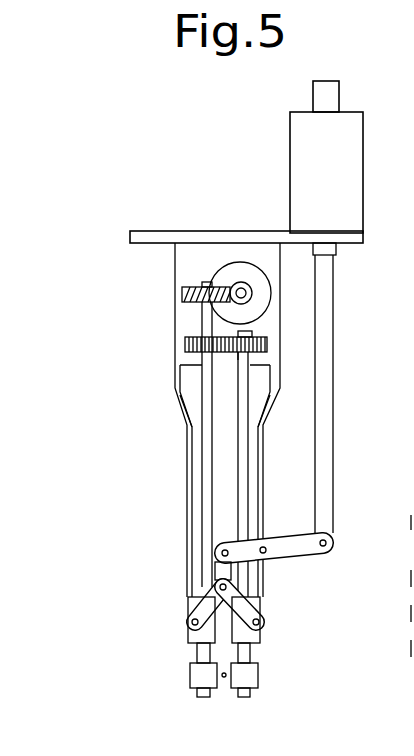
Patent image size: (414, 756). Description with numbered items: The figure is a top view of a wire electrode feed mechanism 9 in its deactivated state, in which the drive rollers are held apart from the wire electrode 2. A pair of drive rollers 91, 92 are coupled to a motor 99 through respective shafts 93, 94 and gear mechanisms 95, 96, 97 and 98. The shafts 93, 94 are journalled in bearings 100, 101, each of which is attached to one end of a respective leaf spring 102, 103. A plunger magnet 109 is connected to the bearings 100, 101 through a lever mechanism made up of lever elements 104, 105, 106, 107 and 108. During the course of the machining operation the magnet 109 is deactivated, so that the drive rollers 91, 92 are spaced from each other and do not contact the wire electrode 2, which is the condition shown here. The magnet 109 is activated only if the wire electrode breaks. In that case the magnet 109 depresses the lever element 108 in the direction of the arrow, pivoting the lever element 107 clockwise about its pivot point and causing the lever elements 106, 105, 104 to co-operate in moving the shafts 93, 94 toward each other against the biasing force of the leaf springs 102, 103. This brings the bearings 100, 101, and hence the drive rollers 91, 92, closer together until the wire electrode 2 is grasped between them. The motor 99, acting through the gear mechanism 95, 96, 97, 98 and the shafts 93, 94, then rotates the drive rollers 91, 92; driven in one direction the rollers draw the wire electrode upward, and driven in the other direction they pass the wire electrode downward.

The wire electrode 2 is at (224, 678).
The wire feed mechanism 9 is at (97, 233).
The drive roller 91 is at (192, 681).
The drive roller 92 is at (250, 678).
The shaft 93 is at (212, 512).
The shaft 94 is at (243, 511).
The gear mechanism 95 is at (185, 344).
The gear mechanism 96 is at (262, 340).
The gear mechanism 97 is at (182, 297).
The gear mechanism 98 is at (253, 297).
The motor 99 is at (256, 277).
The bearing 100 is at (190, 643).
The bearing 101 is at (255, 642).
The leaf spring 102 is at (187, 448).
The leaf spring 103 is at (262, 443).
The lever element 104 is at (190, 612).
The lever element 105 is at (262, 612).
The lever element 106 is at (222, 572).
The lever element 107 is at (292, 560).
The lever element 108 is at (333, 357).
The plunger magnet 109 is at (298, 173).